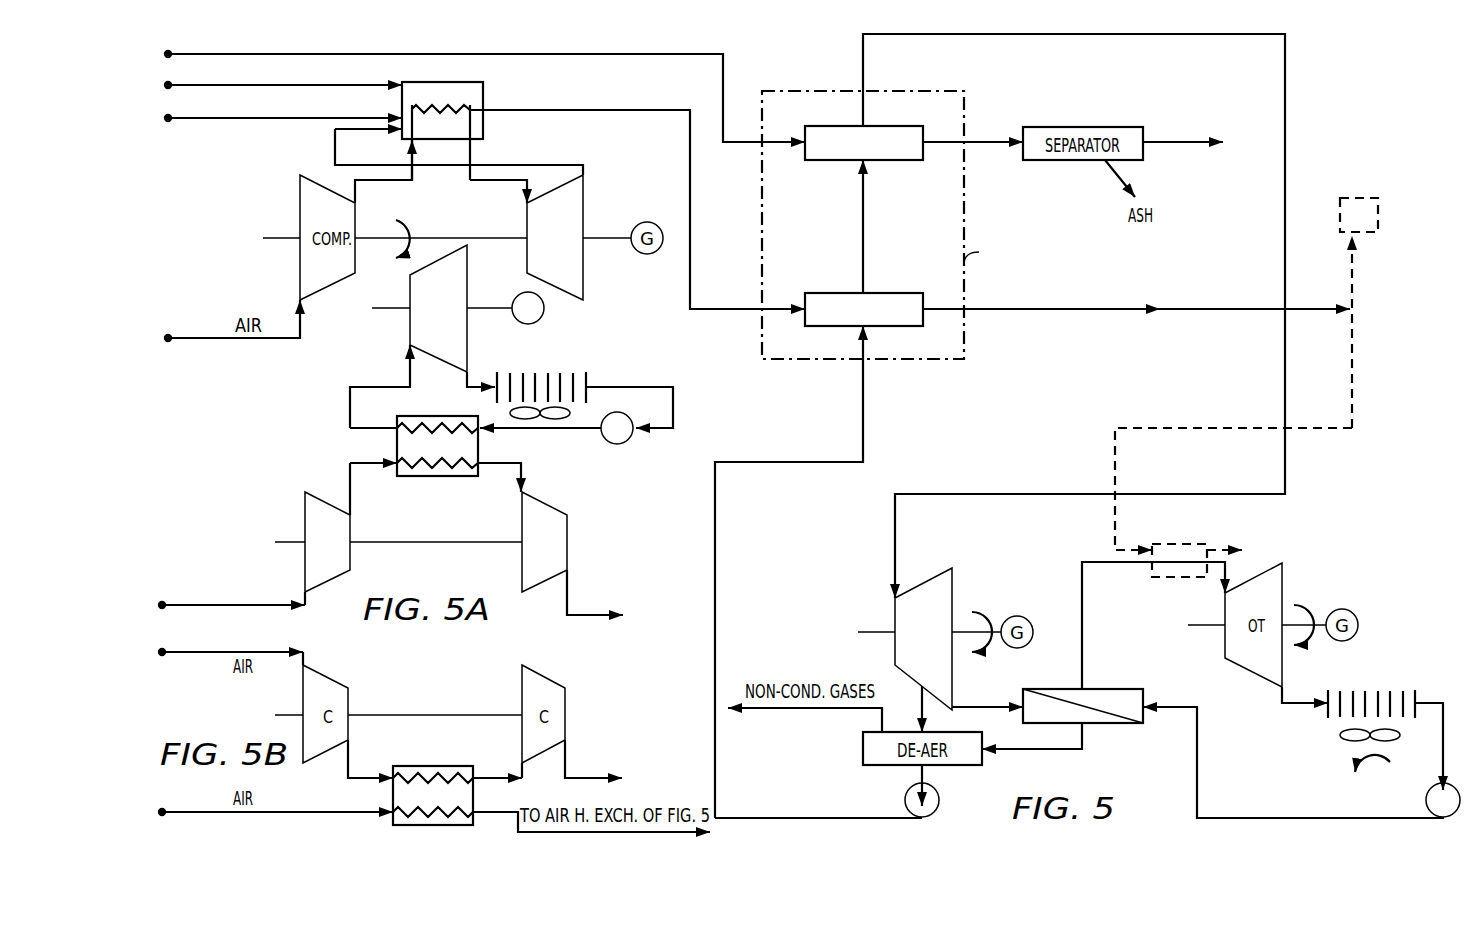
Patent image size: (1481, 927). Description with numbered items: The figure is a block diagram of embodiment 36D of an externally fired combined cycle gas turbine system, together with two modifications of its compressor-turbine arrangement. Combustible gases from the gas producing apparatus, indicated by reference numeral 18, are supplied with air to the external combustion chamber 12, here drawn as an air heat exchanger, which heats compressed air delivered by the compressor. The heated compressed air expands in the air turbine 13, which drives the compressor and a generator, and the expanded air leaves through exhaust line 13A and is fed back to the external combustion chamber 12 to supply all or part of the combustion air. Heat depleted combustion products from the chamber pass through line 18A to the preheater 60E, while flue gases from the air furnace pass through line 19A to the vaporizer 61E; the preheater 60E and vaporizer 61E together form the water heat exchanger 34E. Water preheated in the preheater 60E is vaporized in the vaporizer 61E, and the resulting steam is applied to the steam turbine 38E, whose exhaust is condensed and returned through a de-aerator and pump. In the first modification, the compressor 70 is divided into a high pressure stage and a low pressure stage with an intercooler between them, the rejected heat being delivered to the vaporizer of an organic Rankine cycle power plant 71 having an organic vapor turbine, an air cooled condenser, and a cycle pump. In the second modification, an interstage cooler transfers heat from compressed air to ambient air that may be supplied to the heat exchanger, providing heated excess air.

In FIG. 5, the fuel and combustible gas supply lines 18 is at (172, 88).
In FIG. 5, the external combustion chamber 12 is at (483, 118).
In FIG. 5, the air turbine 13 is at (583, 202).
In FIG. 5, the exhaust line 13A is at (555, 165).
In FIG. 5, the line 18A is at (556, 110).
In FIG. 5, the line 19A is at (723, 62).
In FIG. 5, the vaporizer 61E is at (885, 126).
In FIG. 5, the preheater 60E is at (885, 293).
In FIG. 5, the water heat exchanger 34E is at (964, 197).
In FIG. 5A, the organic Rankine cycle power plant 71 is at (593, 350).
In FIG. 5A, the compressor 70 is at (603, 488).
In FIG. 5, the embodiment 36D is at (1327, 473).
In FIG. 5, the steam turbine 38E is at (945, 573).